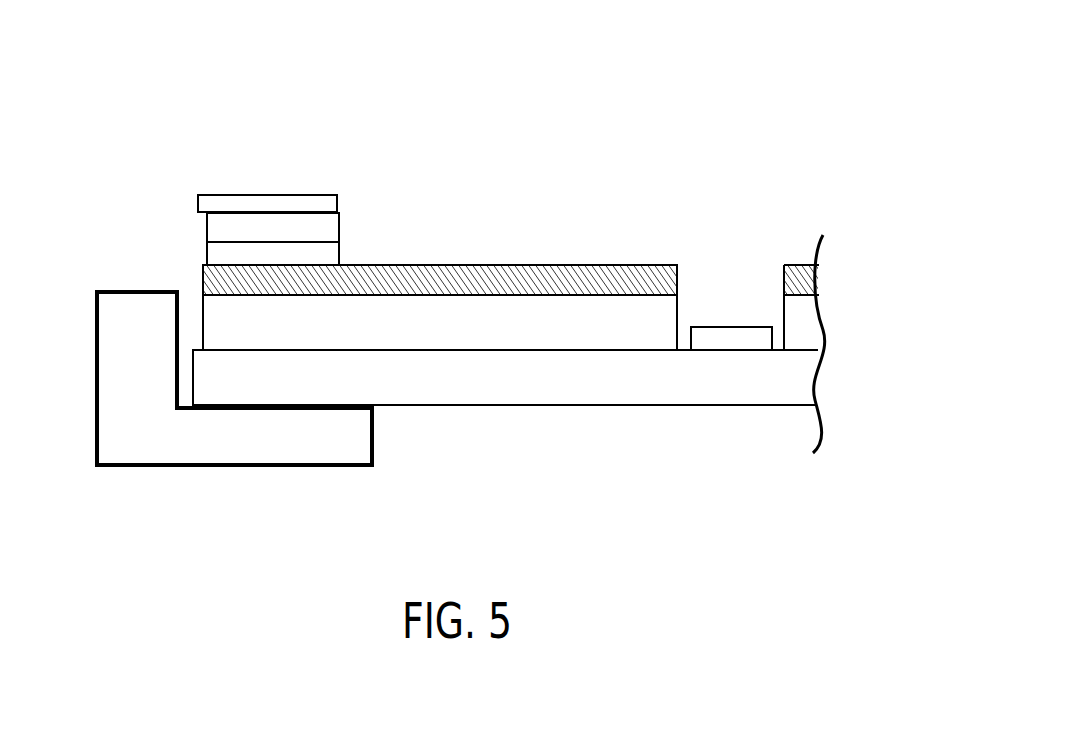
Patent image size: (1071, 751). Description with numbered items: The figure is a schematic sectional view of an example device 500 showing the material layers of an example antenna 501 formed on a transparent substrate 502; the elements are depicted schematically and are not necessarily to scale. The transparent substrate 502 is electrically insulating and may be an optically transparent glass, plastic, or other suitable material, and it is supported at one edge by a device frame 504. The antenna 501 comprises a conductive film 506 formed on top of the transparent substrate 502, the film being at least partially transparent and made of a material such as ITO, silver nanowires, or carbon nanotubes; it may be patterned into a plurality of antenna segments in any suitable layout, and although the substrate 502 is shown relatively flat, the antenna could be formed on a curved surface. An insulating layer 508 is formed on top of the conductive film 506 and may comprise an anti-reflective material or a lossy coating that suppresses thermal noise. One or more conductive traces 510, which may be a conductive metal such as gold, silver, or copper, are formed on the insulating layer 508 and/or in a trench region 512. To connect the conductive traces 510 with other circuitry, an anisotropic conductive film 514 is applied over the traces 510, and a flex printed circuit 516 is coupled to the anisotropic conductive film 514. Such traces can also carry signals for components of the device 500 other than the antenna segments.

The device 500 is at (772, 42).
The antenna 501 is at (202, 327).
The transparent substrate 502 is at (528, 391).
The device frame 504 is at (163, 445).
The conductive film 506 is at (457, 333).
The insulating layer 508 is at (667, 280).
The conductive traces 510 is at (207, 257).
The trench region 512 is at (766, 254).
The anisotropic conductive film 514 is at (207, 229).
The flex printed circuit 516 is at (198, 204).